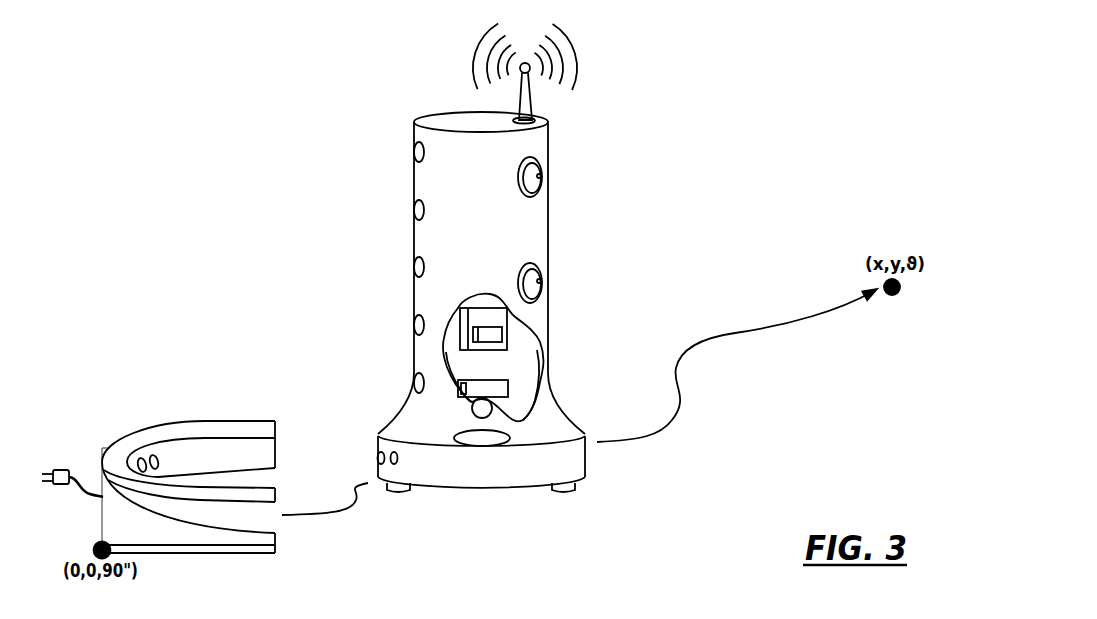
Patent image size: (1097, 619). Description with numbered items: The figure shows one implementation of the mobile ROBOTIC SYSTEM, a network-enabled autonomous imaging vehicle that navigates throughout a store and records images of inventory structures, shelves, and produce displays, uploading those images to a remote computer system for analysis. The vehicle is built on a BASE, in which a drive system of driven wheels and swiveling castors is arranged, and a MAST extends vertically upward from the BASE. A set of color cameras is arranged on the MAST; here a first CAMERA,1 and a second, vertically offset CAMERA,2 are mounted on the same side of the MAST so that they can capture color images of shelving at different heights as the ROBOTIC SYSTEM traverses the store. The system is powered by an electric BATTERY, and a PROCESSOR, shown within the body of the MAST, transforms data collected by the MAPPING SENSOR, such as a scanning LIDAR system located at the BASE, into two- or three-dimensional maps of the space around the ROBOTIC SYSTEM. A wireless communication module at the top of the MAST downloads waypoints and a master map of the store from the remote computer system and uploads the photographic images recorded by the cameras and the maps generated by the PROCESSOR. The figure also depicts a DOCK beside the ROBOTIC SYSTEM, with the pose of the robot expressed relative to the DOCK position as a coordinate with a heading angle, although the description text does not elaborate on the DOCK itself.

The mobile robotic system ROBOTIC SYSTEM is at (430, 177).
The mast MAST is at (428, 243).
The color camera CAMERA,1 is at (541, 177).
The color camera CAMERA,2 is at (541, 283).
The processor PROCESSOR is at (487, 326).
The electric battery BATTERY is at (487, 385).
The base BASE is at (435, 489).
The mapping sensor MAPPING SENSOR is at (481, 446).
The dock DOCK is at (262, 446).